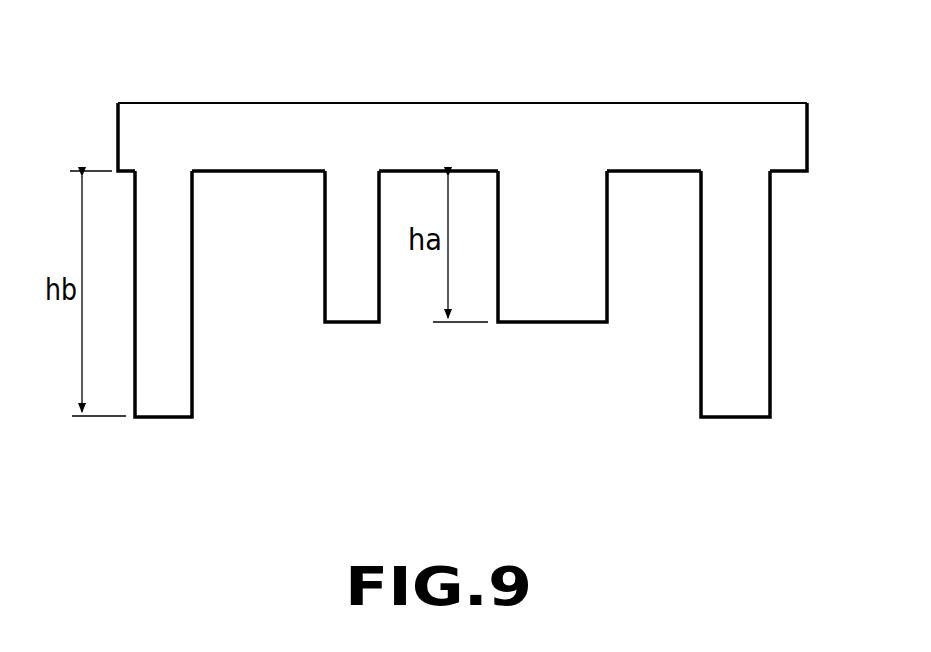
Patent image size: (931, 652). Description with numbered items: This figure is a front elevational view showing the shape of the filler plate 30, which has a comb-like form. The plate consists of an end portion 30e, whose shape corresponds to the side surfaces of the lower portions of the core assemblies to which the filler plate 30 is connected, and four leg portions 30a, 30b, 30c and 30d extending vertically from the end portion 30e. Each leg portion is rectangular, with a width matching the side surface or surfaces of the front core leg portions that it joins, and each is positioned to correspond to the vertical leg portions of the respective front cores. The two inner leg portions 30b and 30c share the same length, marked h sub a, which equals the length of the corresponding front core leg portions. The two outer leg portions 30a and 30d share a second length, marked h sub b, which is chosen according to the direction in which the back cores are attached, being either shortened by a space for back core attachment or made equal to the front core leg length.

The filler plate 30 is at (462, 222).
The leg portion 30a is at (710, 397).
The leg portion 30b is at (568, 311).
The leg portion 30c is at (340, 311).
The leg portion 30d is at (187, 397).
The end portion 30e is at (225, 113).